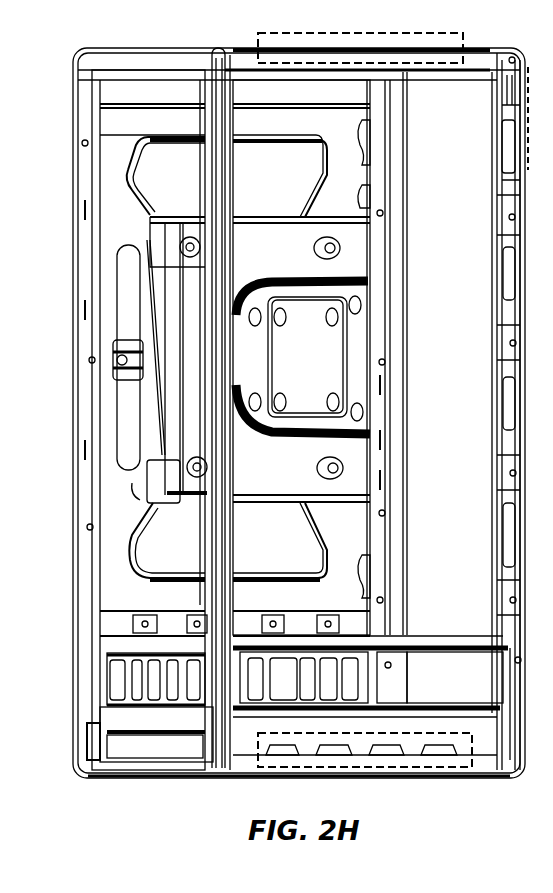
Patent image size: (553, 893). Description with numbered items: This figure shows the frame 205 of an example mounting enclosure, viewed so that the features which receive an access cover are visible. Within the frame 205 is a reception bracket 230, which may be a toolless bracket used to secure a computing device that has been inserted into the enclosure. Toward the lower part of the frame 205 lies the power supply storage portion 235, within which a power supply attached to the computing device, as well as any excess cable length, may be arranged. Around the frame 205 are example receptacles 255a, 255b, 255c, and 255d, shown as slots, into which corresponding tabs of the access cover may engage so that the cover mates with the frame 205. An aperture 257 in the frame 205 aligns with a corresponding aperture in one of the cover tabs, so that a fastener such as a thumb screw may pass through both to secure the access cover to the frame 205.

The frame 205 is at (80, 97).
The aperture 257 is at (207, 137).
The reception bracket 230 is at (283, 247).
The power supply storage portion 235 is at (100, 739).
The receptacle 255a is at (512, 158).
The receptacle 255b is at (430, 68).
The receptacle 255c is at (470, 768).
The receptacle 255d is at (423, 634).